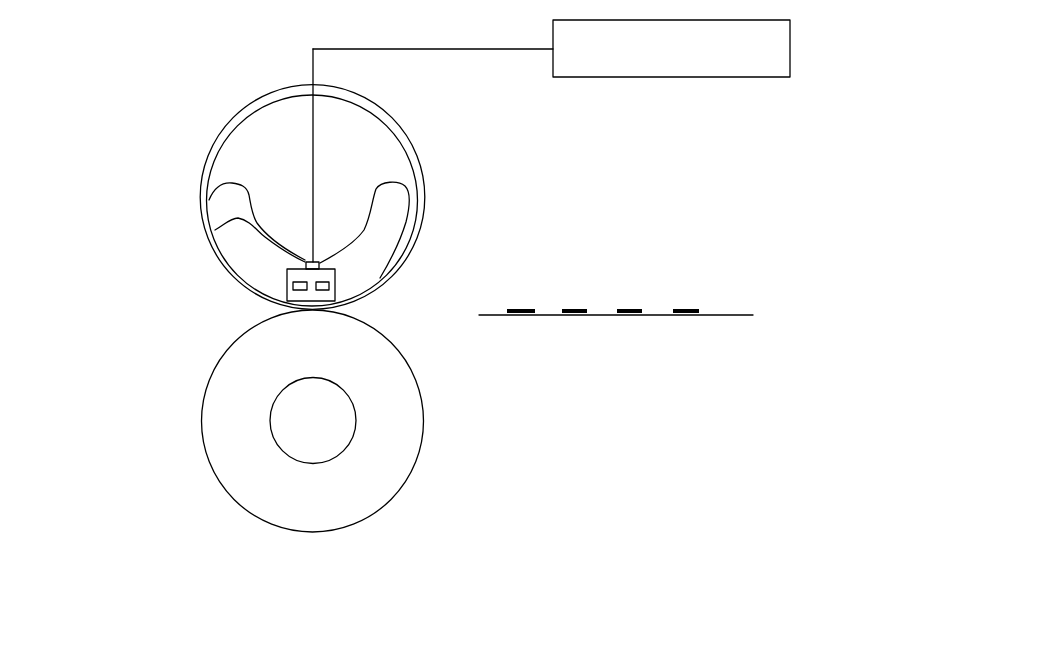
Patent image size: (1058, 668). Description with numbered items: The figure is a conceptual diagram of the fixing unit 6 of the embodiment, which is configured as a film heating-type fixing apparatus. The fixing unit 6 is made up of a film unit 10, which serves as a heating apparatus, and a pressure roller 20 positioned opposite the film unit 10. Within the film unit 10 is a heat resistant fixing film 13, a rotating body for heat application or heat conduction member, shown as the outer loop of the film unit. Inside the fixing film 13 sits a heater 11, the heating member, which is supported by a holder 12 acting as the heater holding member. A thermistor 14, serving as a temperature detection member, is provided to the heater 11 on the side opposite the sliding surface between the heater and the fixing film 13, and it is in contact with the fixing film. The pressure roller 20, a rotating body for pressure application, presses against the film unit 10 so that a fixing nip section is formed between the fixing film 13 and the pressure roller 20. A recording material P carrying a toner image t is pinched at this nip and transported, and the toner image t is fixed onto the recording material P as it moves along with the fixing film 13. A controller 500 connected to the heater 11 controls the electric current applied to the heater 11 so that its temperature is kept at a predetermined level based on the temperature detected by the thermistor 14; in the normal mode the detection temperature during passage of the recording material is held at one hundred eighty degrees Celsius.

The fixing unit 6 is at (135, 442).
The film unit 10 is at (197, 126).
The heater 11 is at (342, 279).
The holder 12 is at (397, 200).
The fixing film 13 is at (412, 153).
The thermistor 14 is at (215, 230).
The pressure roller 20 is at (423, 437).
The controller 500 is at (790, 52).
The toner image t is at (688, 310).
The recording material P is at (732, 315).